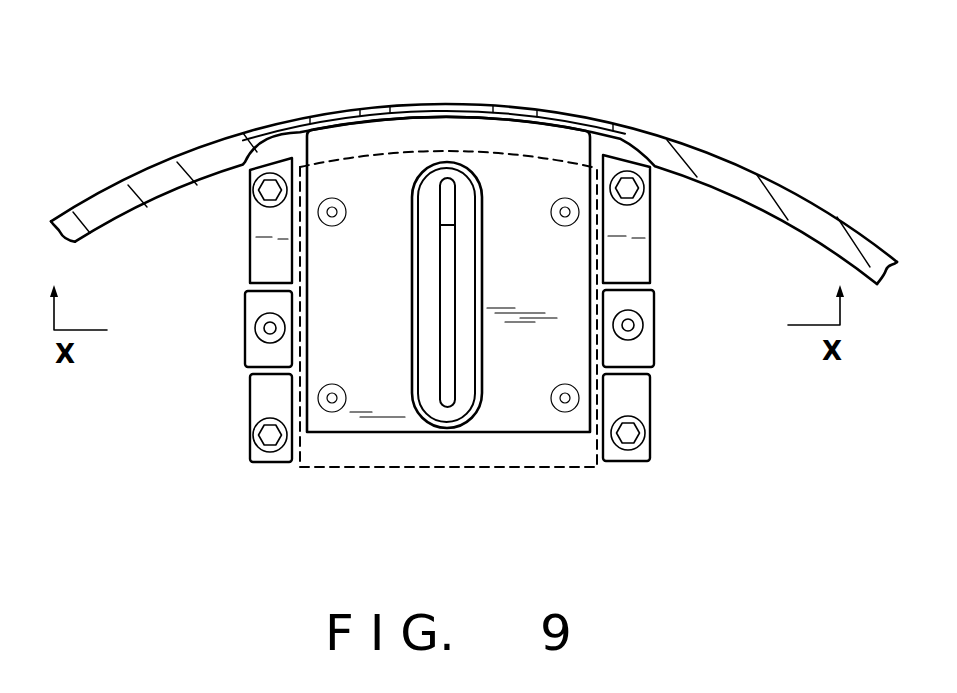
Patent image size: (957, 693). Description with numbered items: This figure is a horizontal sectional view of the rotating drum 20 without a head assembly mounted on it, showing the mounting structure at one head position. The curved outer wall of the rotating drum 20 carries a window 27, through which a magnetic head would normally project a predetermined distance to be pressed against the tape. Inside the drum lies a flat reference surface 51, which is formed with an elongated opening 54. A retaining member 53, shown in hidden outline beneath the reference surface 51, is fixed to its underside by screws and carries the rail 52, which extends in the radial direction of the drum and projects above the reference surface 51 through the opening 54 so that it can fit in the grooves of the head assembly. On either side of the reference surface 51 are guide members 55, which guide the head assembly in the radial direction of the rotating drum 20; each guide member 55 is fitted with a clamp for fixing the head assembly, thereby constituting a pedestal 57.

The rotating drum 20 is at (722, 140).
The window 27 is at (500, 107).
The reference surface 51 is at (525, 418).
The rail 52 is at (452, 387).
The retaining member 53 is at (387, 468).
The opening 54 is at (427, 253).
The guide member 55 is at (687, 413).
The pedestal 57 is at (682, 310).